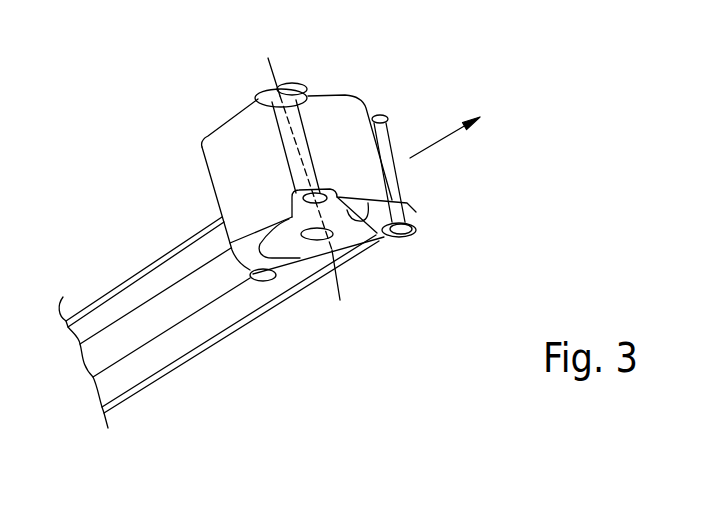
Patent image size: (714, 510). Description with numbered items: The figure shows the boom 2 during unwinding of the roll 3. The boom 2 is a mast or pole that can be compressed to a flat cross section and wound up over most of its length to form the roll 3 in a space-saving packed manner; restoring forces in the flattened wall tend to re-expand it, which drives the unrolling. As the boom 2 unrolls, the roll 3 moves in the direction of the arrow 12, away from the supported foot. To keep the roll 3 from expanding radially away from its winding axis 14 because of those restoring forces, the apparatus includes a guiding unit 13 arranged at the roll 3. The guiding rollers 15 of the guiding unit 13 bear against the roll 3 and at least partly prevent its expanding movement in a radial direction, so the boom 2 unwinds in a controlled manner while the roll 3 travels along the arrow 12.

The boom 2 is at (160, 344).
The roll 3 is at (342, 128).
The arrow 12 is at (433, 144).
The guiding unit 13 is at (377, 233).
The winding axis 14 is at (337, 285).
The guiding rollers 15 is at (298, 127).